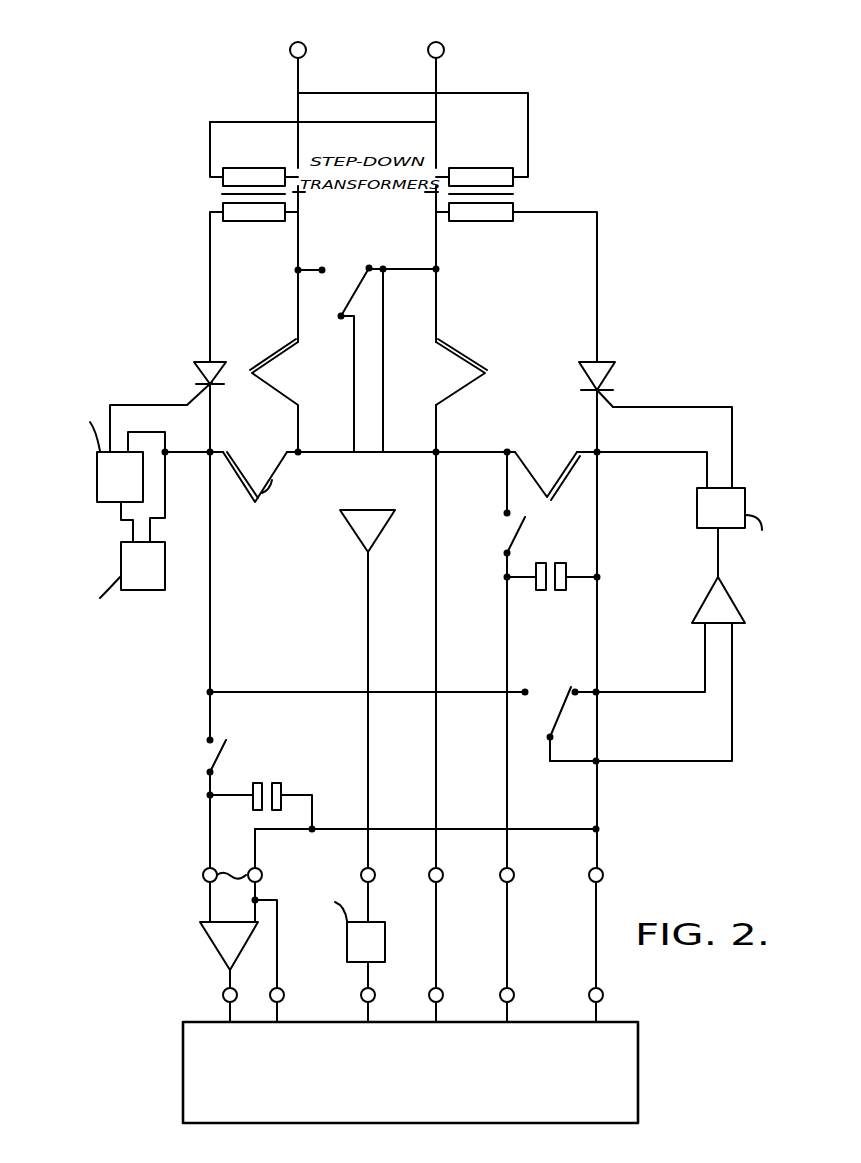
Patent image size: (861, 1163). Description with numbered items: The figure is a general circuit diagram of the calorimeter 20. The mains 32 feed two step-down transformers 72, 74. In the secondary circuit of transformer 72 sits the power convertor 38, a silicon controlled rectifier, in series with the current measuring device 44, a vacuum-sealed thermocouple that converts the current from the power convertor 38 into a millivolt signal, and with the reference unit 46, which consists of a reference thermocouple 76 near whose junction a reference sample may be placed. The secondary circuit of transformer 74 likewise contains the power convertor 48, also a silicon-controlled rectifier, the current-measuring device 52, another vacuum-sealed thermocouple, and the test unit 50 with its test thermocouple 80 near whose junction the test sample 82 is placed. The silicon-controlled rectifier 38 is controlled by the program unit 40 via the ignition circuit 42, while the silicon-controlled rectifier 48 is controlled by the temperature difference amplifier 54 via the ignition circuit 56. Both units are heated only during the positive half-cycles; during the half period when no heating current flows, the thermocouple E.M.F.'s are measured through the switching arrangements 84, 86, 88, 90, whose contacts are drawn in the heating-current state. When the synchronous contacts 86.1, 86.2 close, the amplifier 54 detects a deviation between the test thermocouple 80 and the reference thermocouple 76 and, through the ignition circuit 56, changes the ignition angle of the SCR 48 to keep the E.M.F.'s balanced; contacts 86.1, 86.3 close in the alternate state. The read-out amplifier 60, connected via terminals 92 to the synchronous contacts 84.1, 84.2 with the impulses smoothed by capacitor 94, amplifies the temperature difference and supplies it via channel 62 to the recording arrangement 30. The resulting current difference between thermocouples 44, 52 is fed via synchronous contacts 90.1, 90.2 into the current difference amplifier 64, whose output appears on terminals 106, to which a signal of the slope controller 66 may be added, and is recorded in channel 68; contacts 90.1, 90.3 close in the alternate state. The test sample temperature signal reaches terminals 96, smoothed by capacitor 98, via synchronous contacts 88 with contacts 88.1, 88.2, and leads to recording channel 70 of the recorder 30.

The calorimeter 20 is at (628, 157).
The recording arrangement 30 is at (338, 1100).
The mains 32 is at (275, 42).
The power convertor 38 is at (190, 525).
The program unit 40 is at (101, 586).
The ignition circuit 42 is at (100, 465).
The current measuring device 44 is at (278, 395).
The reference unit 46 is at (255, 473).
The power convertor 48 is at (617, 613).
The test unit 50 is at (546, 473).
The current-measuring device 52 is at (455, 395).
The temperature difference amplifier 54 is at (647, 644).
The ignition circuit 56 is at (771, 527).
The readout amplifier 60 is at (238, 935).
The channel 62 is at (277, 1022).
The current difference amplifier 64 is at (367, 689).
The slope controller 66 is at (324, 930).
The channel 68 is at (436, 1022).
The recording channel 70 is at (596, 1022).
The step-down transformer 72 is at (241, 194).
The step-down transformer 74 is at (494, 194).
The reference thermocouple 76 is at (276, 484).
The test thermocouple 80 is at (577, 468).
The test sample 82 is at (552, 497).
The switching arrangement 84 is at (218, 780).
The synchronous contact 84.1 is at (235, 760).
The synchronous contact 84.2 is at (212, 742).
The switching arrangement 86 is at (549, 716).
The synchronous contact 86.1 is at (539, 724).
The synchronous contact 86.2 is at (524, 694).
The synchronous contact 86.3 is at (578, 694).
The switching arrangement 88 is at (486, 660).
The synchronous contact 88.1 is at (505, 554).
The synchronous contact 88.2 is at (506, 512).
The switching arrangement 90 is at (367, 346).
The synchronous contact 90.1 is at (340, 305).
The synchronous contact 90.2 is at (328, 282).
The synchronous contact 90.3 is at (373, 283).
The terminals 92 is at (229, 862).
The capacitor 94 is at (262, 807).
The terminals 96 is at (593, 884).
The capacitor 98 is at (553, 591).
The terminals 106 is at (433, 884).